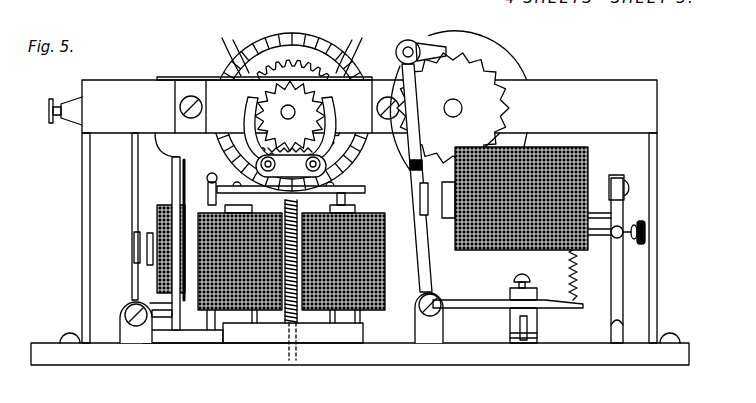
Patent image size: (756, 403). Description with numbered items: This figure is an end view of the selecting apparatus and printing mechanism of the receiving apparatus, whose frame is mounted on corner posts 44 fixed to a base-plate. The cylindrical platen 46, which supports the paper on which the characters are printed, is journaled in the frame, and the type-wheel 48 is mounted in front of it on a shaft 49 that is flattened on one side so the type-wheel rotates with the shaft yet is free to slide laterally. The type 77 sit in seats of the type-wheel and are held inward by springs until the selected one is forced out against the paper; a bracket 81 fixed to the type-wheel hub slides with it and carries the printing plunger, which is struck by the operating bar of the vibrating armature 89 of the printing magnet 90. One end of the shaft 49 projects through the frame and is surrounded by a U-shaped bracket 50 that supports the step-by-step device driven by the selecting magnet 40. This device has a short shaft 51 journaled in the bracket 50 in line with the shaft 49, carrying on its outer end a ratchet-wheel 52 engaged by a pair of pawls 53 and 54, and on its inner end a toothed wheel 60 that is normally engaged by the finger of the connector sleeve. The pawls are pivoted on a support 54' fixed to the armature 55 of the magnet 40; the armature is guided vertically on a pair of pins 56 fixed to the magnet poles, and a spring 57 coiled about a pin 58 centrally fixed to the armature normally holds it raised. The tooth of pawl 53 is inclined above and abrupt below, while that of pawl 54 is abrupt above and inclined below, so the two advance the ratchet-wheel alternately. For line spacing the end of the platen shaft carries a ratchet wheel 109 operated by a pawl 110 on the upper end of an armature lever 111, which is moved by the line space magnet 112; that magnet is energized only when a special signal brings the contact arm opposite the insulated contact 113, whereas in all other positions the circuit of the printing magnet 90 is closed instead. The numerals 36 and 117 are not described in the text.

The bobbin flange 36 is at (250, 205).
The selecting magnet 40 is at (388, 280).
The corner posts 44 is at (82, 243).
The cylindrical platen 46 is at (477, 43).
The type-wheel 48 is at (310, 33).
The shaft 49 is at (290, 116).
The U-shaped bracket 50 is at (217, 117).
The short shaft 51 is at (286, 109).
The ratchet-wheel 52 is at (310, 118).
The pawl 53 is at (330, 124).
The pawl 54 is at (243, 127).
The support 54' is at (291, 166).
The armature 55 is at (362, 187).
The pins 56 is at (355, 207).
The spring 57 is at (285, 318).
The pin 58 is at (297, 316).
The toothed wheel 60 is at (280, 62).
The type 77 is at (293, 49).
The bracket 81 is at (170, 77).
The vibrating armature 89 is at (132, 191).
The printing magnet 90 is at (166, 200).
The ratchet wheel 109 is at (470, 75).
The pawl 110 is at (433, 47).
The armature lever 111 is at (420, 135).
The line space magnet 112 is at (559, 147).
The insulated contact 113 is at (577, 85).
The hub 117 is at (459, 106).